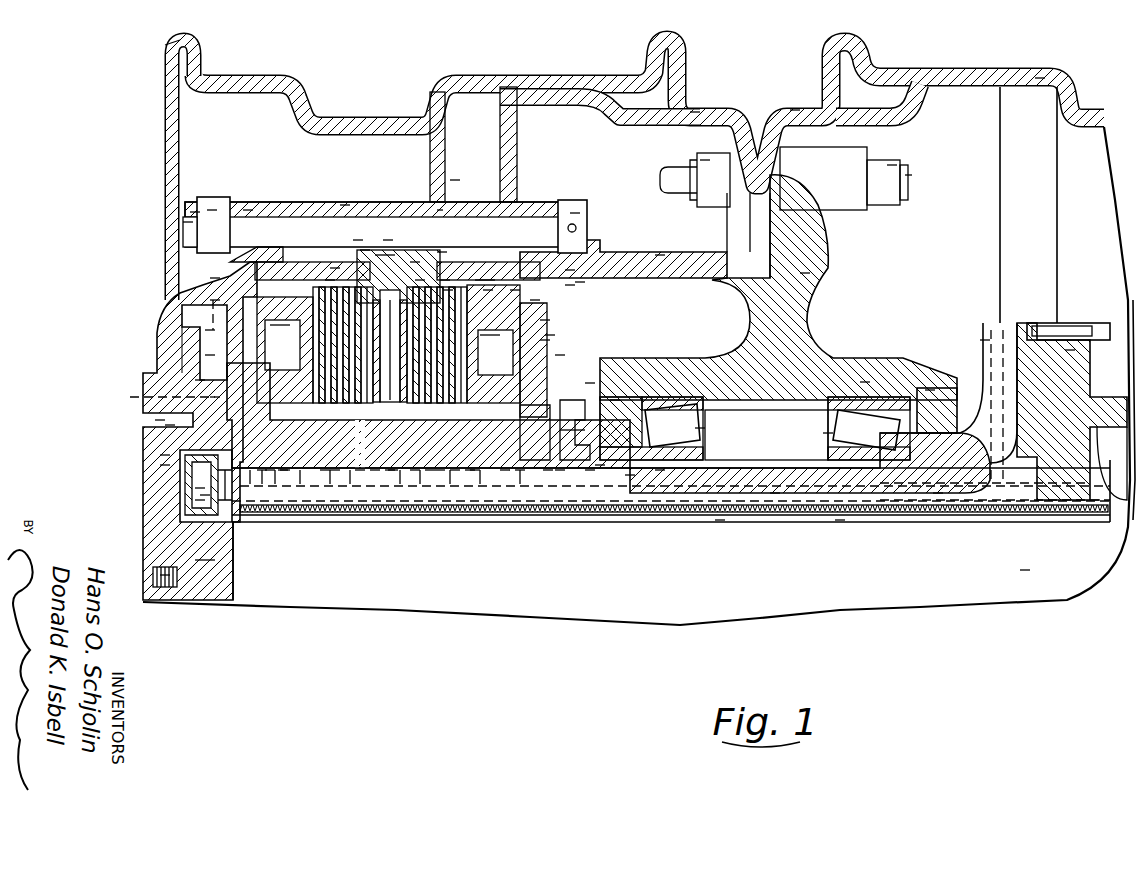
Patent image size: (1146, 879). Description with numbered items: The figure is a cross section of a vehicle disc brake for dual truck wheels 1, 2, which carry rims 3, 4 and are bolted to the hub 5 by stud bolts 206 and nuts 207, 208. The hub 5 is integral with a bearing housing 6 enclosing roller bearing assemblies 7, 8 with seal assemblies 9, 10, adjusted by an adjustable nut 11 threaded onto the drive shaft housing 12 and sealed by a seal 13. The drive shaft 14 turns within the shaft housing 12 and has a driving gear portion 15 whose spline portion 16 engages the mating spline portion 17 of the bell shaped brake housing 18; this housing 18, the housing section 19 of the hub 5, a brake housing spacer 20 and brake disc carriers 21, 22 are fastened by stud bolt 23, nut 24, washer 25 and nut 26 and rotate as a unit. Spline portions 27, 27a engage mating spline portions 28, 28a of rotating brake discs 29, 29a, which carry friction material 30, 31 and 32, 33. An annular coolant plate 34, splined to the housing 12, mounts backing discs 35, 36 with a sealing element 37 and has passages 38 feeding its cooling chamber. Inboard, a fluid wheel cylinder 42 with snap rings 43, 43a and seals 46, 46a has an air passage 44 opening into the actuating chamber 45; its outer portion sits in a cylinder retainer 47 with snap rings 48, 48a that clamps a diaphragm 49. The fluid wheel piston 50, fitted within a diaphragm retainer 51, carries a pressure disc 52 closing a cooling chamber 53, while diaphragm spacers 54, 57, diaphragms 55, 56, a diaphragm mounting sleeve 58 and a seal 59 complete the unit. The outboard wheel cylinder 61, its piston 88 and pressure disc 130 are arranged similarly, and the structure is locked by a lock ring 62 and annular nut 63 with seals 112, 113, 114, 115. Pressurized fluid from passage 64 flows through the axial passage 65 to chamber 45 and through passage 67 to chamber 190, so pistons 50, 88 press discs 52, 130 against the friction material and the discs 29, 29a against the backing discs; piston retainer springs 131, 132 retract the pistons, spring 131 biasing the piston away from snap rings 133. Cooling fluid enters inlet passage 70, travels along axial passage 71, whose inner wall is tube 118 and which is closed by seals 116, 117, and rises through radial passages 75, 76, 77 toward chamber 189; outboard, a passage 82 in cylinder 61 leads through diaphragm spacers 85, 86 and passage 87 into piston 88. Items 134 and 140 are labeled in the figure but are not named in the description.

The vehicle wheel 1 is at (796, 105).
The vehicle wheel 2 is at (697, 110).
The rim 3 is at (1040, 76).
The rim 4 is at (165, 47).
The hub 5 is at (805, 273).
The bearing housing 6 is at (865, 382).
The roller bearing assembly 7 is at (828, 433).
The roller bearing assembly 8 is at (700, 428).
The seal assembly 9 is at (930, 390).
The seal assembly 10 is at (615, 400).
The adjustable nut 11 is at (660, 470).
The drive shaft housing 12 is at (720, 520).
The seal 13 is at (630, 475).
The drive shaft 14 is at (1025, 570).
The driving gear portion 15 is at (165, 465).
The spline portion 16 is at (170, 425).
The mating spline portion 17 is at (160, 420).
The bell shaped brake housing 18 is at (248, 210).
The housing section 19 is at (660, 255).
The brake housing spacer 20 is at (440, 215).
The brake disc carrier 21 is at (452, 180).
The brake disc carrier 22 is at (345, 205).
The stud bolt 23 is at (185, 222).
The nut 24 is at (576, 213).
The washer 25 is at (212, 210).
The nut 26 is at (195, 212).
The spline portion 27 is at (441, 250).
The spline portion 27a is at (388, 240).
The mating spline portion 28 is at (445, 280).
The mating spline portion 28a is at (365, 250).
The rotating brake disc 29 is at (448, 290).
The rotating brake disc 29a is at (358, 240).
The friction material 30 is at (440, 470).
The friction material 31 is at (455, 470).
The friction material 32 is at (335, 470).
The friction material 33 is at (360, 470).
The annular coolant plate 34 is at (385, 265).
The backing disc 35 is at (375, 470).
The backing disc 36 is at (415, 470).
The sealing element 37 is at (420, 280).
The passages 38 is at (390, 470).
The fluid wheel cylinder 42 is at (570, 285).
The snap ring 43 is at (590, 470).
The snap ring 43a is at (600, 465).
The air passage 44 is at (560, 355).
The fluid actuating chamber 45 is at (550, 335).
The actuating fluid seal 46 is at (548, 470).
The actuating fluid seal 46a is at (560, 470).
The cylinder retainer 47 is at (515, 290).
The snap ring 48 is at (570, 270).
The snap ring 48a is at (580, 282).
The diaphragm 49 is at (480, 280).
The fluid wheel piston 50 is at (545, 340).
The diaphragm retainer 51 is at (535, 300).
The pressure disc 52 is at (475, 470).
The cooling chamber 53 is at (545, 320).
The diaphragm spacer 54 is at (590, 383).
The diaphragm 55 is at (490, 347).
The diaphragm 56 is at (578, 409).
The second diaphragm spacer 57 is at (520, 470).
The diaphragm mounting sleeve 58 is at (470, 470).
The seal 59 is at (430, 470).
The outboard wheel cylinder 61 is at (215, 278).
The lock ring 62 is at (200, 500).
The annular nut 63 is at (200, 488).
The passage 64 is at (985, 340).
The axially extending passage 65 is at (938, 493).
The passage 67 is at (215, 397).
The inlet passage 70 is at (1070, 350).
The axially extending passage 71 is at (775, 493).
The radially extending passage 75 is at (505, 470).
The radially extending passage 76 is at (393, 470).
The radially extending passage 77 is at (283, 470).
The passage 82 is at (285, 470).
The diaphragm spacer 85 is at (165, 455).
The diaphragm spacer 86 is at (200, 380).
The passage 87 is at (284, 340).
The fluid wheel piston 88 is at (210, 355).
The seal 112 is at (205, 495).
The seal 113 is at (270, 470).
The seal 114 is at (165, 575).
The seal 115 is at (262, 470).
The seal 116 is at (1095, 500).
The seal 117 is at (205, 571).
The tube 118 is at (840, 520).
The pressure disc 130 is at (325, 470).
The piston retainer spring 131 is at (488, 290).
The piston retainer spring 132 is at (330, 280).
The snap ring 133 is at (490, 280).
The plate 134 is at (335, 268).
The hub 140 is at (415, 262).
The chamber 189 is at (210, 330).
The fluid actuating chamber 190 is at (215, 300).
The stud bolt 206 is at (910, 175).
The nut 207 is at (892, 165).
The nut 208 is at (705, 160).